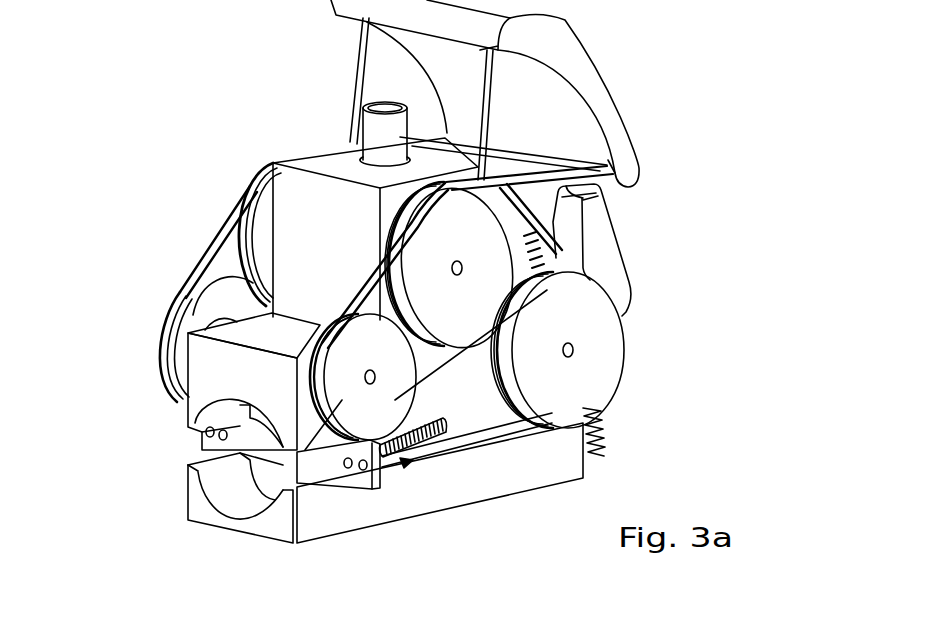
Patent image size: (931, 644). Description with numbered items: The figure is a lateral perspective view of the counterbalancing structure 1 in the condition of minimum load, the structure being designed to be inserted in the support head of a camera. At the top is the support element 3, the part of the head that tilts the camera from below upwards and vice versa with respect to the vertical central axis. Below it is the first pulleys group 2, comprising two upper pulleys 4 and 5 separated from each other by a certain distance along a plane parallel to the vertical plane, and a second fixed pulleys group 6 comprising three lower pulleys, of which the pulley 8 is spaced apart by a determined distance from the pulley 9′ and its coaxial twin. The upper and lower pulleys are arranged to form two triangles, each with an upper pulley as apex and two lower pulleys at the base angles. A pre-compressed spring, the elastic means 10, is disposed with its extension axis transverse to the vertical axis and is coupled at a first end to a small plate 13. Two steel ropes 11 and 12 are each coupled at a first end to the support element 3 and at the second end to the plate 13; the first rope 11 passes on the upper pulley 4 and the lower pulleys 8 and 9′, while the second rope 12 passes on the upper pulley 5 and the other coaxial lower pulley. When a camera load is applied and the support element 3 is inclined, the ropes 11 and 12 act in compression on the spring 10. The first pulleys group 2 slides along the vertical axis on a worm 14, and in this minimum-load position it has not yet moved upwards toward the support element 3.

The counterbalancing structure 1 is at (286, 44).
The first pulleys group 2 is at (335, 163).
The support element 3 is at (602, 82).
The upper pulley 4 is at (240, 248).
The upper pulley 5 is at (560, 262).
The second fixed pulleys group 6 is at (504, 470).
The lower pulley 8 is at (168, 310).
The lower pulley 9′ is at (553, 417).
The pre-compressed elastic means 10 is at (425, 468).
The first rope 11 is at (198, 277).
The second rope 12 is at (357, 58).
The plate 13 is at (357, 472).
The worm 14 is at (378, 142).